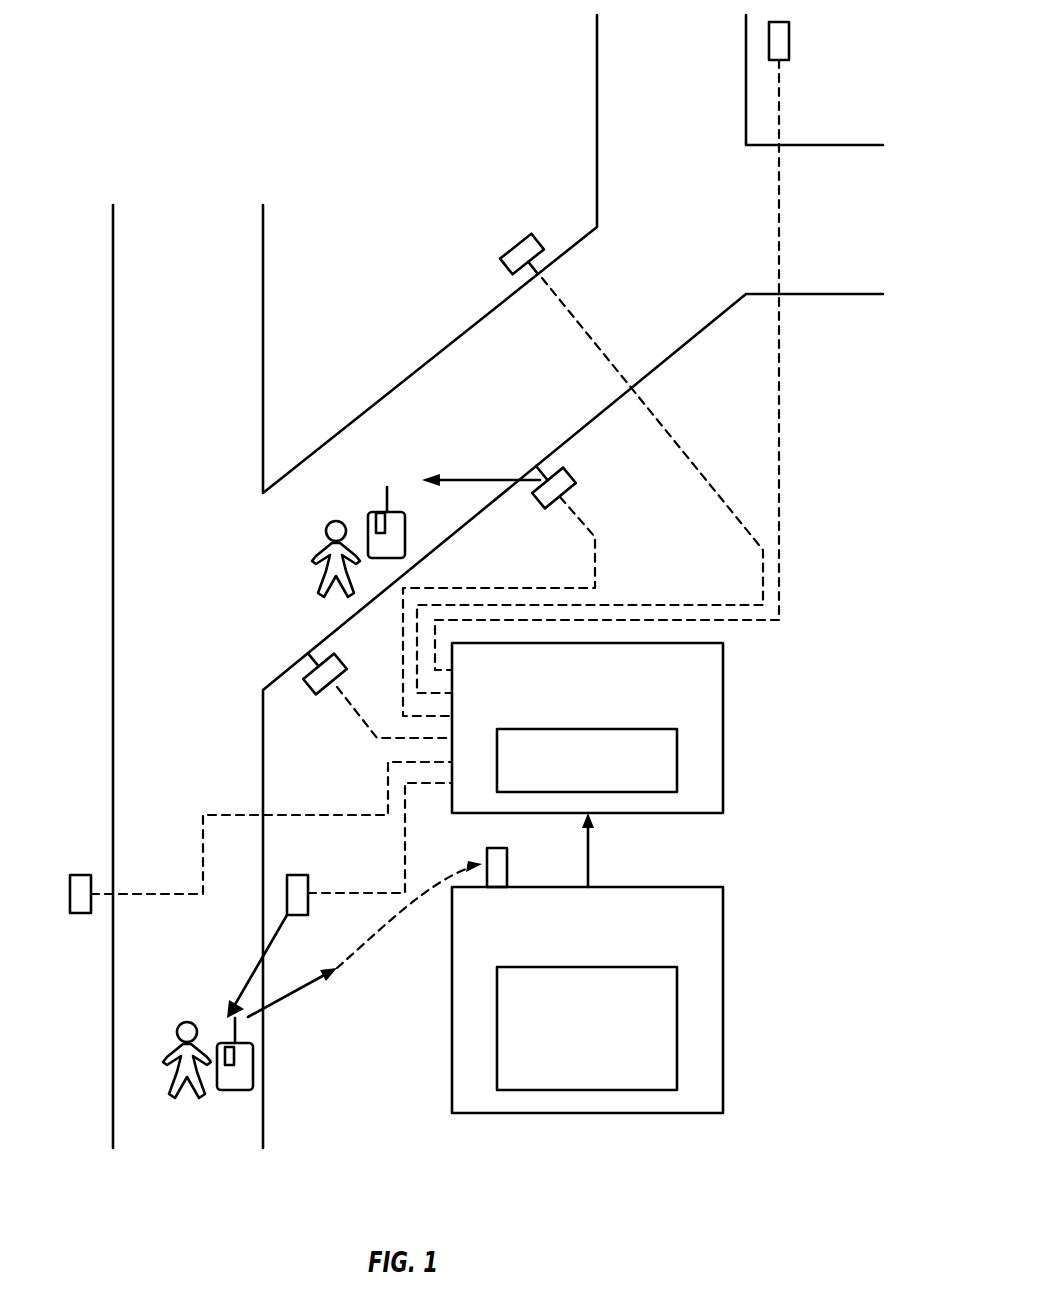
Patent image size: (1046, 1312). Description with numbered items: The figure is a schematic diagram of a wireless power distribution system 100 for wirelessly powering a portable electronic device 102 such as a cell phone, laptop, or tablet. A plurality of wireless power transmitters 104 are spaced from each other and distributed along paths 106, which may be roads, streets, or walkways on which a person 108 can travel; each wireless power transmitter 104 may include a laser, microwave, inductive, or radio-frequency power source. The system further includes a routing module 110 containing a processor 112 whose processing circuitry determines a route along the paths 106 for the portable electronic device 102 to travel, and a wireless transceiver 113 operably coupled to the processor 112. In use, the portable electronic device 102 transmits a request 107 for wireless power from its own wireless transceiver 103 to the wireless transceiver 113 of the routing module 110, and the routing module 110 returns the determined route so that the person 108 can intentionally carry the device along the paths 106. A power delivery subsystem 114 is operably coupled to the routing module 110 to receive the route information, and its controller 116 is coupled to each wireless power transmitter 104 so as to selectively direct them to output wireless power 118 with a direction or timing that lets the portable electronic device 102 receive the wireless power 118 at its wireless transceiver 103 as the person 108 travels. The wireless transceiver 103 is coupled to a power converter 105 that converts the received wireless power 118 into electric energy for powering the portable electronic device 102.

The wireless power distribution system 100 is at (106, 132).
The portable electronic device 102 is at (390, 546).
The wireless transceiver 103 is at (238, 1027).
The wireless power transmitter 104 is at (790, 40).
The power converter 105 is at (377, 520).
The path 106 is at (138, 807).
The request 107 is at (297, 983).
The person 108 is at (318, 575).
The routing module 110 is at (688, 934).
The processor 112 is at (663, 1036).
The wireless transceiver 113 is at (508, 865).
The power delivery subsystem 114 is at (667, 709).
The controller 116 is at (662, 772).
The wireless power 118 is at (480, 480).